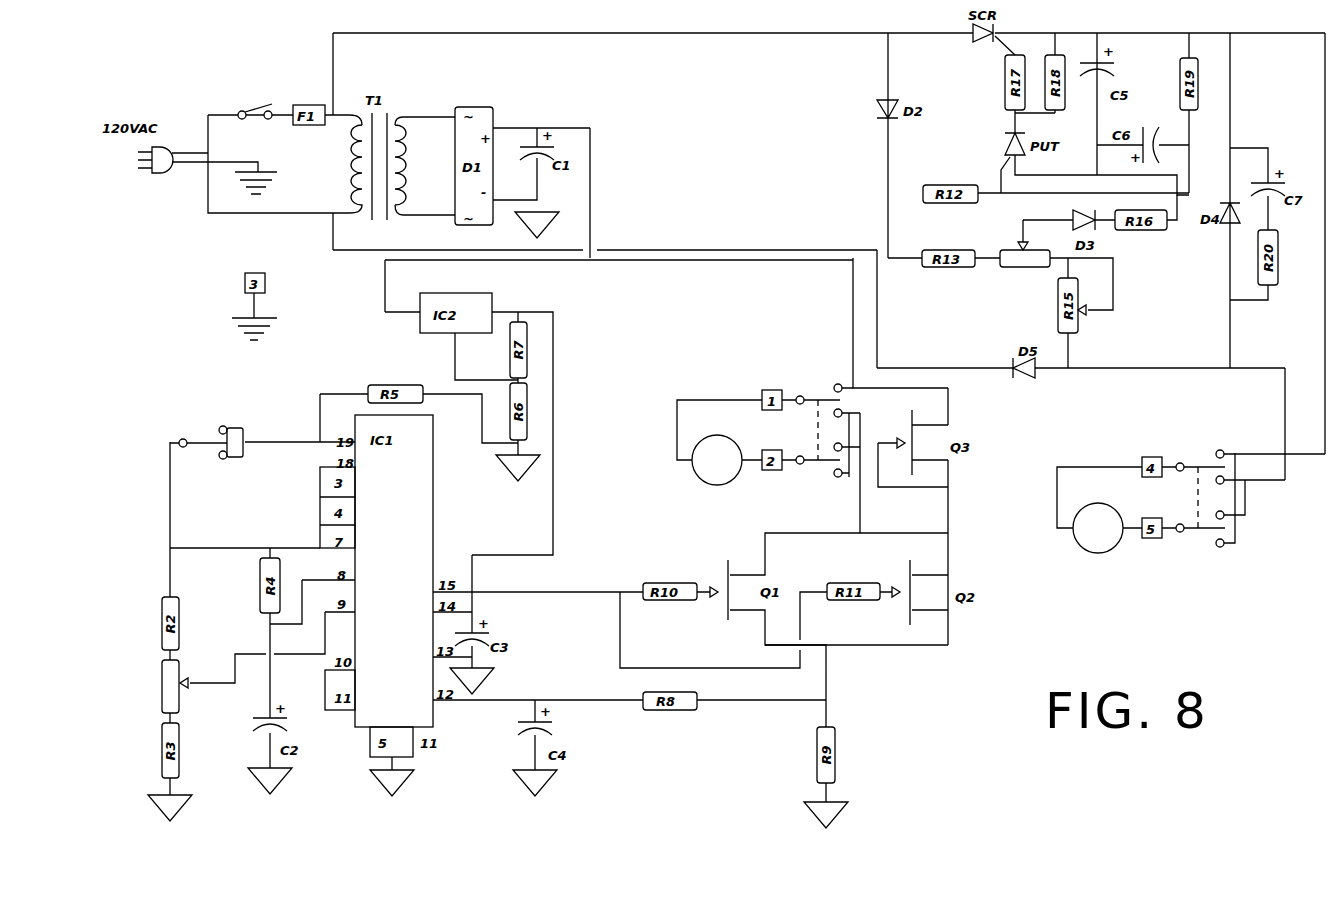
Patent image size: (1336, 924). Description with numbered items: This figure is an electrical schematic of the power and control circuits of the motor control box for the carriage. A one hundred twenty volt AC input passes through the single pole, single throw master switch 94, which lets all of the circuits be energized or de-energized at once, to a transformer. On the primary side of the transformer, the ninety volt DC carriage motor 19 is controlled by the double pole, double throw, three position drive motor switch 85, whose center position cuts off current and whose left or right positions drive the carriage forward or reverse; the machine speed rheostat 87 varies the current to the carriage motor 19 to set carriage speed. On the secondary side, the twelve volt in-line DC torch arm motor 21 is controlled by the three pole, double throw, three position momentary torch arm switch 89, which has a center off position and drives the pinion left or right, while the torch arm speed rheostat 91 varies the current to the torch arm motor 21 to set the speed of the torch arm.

The master switch 94 is at (241, 111).
The torch arm switch 89 is at (799, 397).
The torch arm speed rheostat 91 is at (164, 690).
The torch arm motor 21 is at (697, 474).
The machine speed rheostat 87 is at (1025, 265).
The drive motor switch 85 is at (1183, 462).
The carriage motor 19 is at (1100, 553).